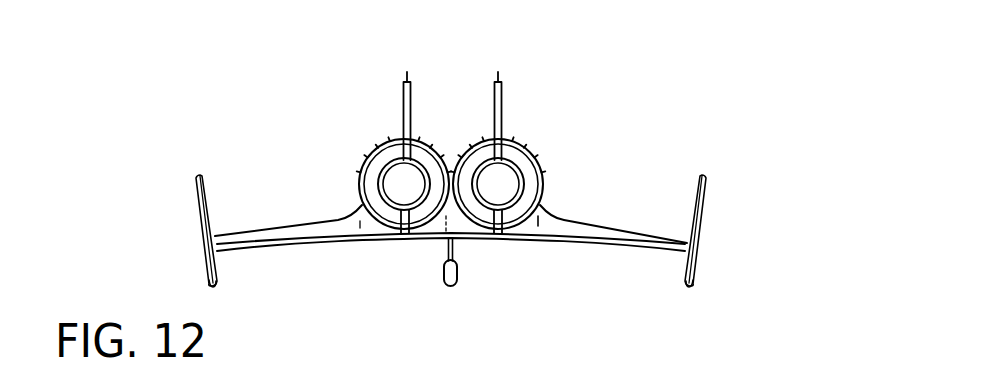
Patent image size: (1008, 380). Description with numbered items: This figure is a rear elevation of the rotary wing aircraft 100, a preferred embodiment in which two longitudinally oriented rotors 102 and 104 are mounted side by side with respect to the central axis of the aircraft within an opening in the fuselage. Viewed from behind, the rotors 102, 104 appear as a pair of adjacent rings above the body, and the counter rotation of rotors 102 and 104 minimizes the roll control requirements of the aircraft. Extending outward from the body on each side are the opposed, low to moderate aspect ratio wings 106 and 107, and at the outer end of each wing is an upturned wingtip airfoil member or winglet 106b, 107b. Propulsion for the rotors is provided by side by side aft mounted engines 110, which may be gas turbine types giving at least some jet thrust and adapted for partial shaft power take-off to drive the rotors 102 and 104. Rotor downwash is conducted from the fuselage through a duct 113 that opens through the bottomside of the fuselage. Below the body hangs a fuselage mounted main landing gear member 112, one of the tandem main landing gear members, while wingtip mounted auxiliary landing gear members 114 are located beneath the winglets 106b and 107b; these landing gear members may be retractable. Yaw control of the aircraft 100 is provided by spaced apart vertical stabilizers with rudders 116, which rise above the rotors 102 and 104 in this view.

The rotary wing aircraft 100 is at (660, 126).
The rotor 102 is at (520, 136).
The rotor 104 is at (391, 136).
The wing 106 is at (293, 224).
The winglet 106b is at (197, 198).
The wing 107 is at (611, 224).
The winglet 107b is at (706, 198).
The engine 110 is at (388, 213).
The main landing gear member 112 is at (442, 253).
The duct 113 is at (540, 214).
The auxiliary landing gear member 114 is at (210, 280).
The rudder 116 is at (492, 98).